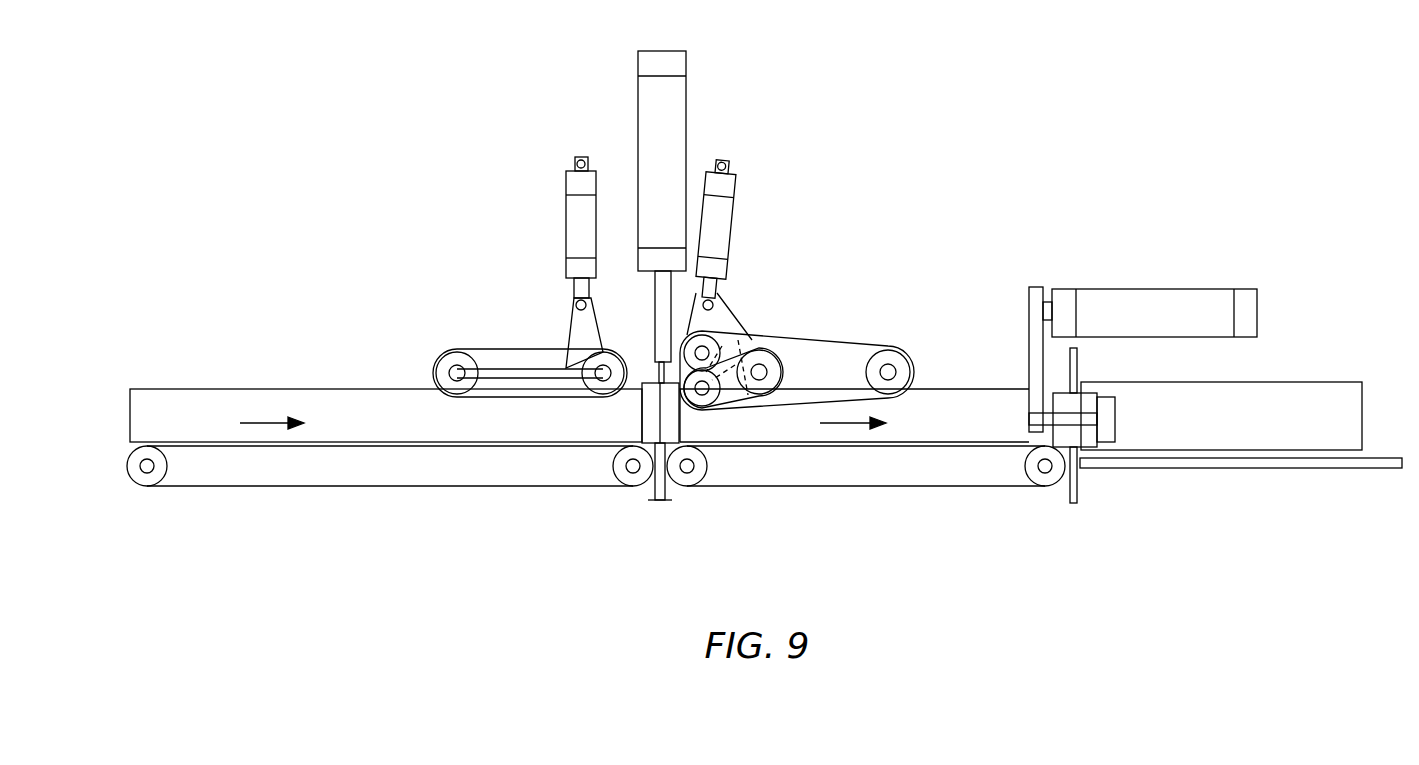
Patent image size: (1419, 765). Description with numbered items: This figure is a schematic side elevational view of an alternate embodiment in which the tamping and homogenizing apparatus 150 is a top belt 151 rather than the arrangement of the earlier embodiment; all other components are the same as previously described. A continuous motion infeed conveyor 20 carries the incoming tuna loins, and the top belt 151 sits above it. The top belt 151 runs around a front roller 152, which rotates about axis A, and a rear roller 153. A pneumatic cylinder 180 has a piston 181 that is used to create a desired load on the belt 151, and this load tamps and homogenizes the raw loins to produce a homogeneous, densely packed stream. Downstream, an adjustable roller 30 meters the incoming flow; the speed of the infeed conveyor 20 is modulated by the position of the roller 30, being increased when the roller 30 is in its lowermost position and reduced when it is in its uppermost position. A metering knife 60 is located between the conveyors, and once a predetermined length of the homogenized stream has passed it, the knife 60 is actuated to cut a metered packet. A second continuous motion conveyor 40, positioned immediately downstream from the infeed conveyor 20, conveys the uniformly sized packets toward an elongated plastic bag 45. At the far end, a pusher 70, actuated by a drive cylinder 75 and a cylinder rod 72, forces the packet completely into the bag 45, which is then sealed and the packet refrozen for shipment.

The infeed conveyor 20 is at (390, 472).
The adjustable roller 30 is at (797, 284).
The second continuous motion conveyor 40 is at (866, 471).
The elongated plastic bag 45 is at (1241, 401).
The metering knife 60 is at (660, 413).
The pusher 70 is at (1112, 425).
The cylinder rod 72 is at (1063, 329).
The drive cylinder 75 is at (1154, 289).
The tamping and homogenizing apparatus 150 is at (506, 272).
The top belt 151 is at (529, 353).
The front roller 152 is at (422, 364).
The rear roller 153 is at (608, 358).
The pneumatic cylinder 180 is at (542, 223).
The piston 181 is at (573, 295).